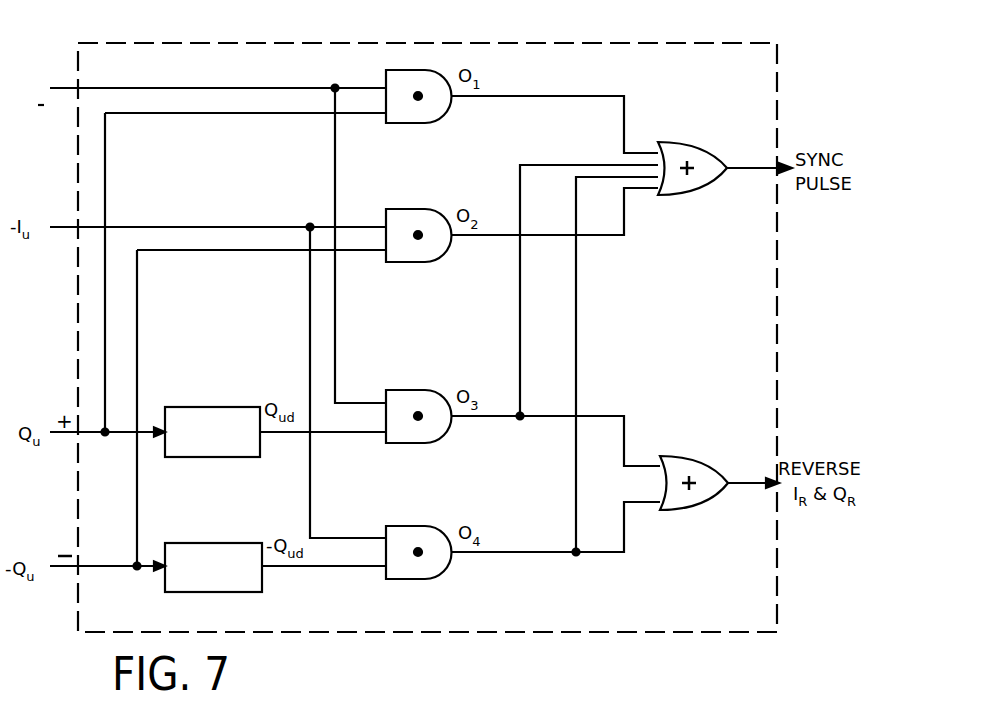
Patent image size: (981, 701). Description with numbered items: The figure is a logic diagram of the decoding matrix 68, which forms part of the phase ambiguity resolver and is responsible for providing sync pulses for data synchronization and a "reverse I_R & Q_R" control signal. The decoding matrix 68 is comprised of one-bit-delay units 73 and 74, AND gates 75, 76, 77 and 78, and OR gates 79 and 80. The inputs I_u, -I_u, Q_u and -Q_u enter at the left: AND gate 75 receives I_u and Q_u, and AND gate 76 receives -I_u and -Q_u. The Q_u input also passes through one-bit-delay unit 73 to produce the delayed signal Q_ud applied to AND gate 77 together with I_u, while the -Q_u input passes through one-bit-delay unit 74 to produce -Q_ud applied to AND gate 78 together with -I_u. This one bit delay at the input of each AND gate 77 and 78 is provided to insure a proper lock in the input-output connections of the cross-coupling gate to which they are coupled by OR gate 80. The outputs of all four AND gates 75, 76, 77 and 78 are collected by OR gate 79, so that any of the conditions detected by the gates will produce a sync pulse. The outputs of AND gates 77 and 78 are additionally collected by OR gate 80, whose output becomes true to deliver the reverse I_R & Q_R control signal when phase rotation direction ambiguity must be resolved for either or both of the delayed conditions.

The decoding matrix 68 is at (576, 43).
The one-bit-delay unit 73 is at (205, 407).
The one-bit-delay unit 74 is at (215, 543).
The AND gate 75 is at (412, 70).
The AND gate 76 is at (412, 209).
The AND gate 77 is at (412, 390).
The AND gate 78 is at (412, 526).
The OR gate 79 is at (714, 149).
The OR gate 80 is at (708, 462).